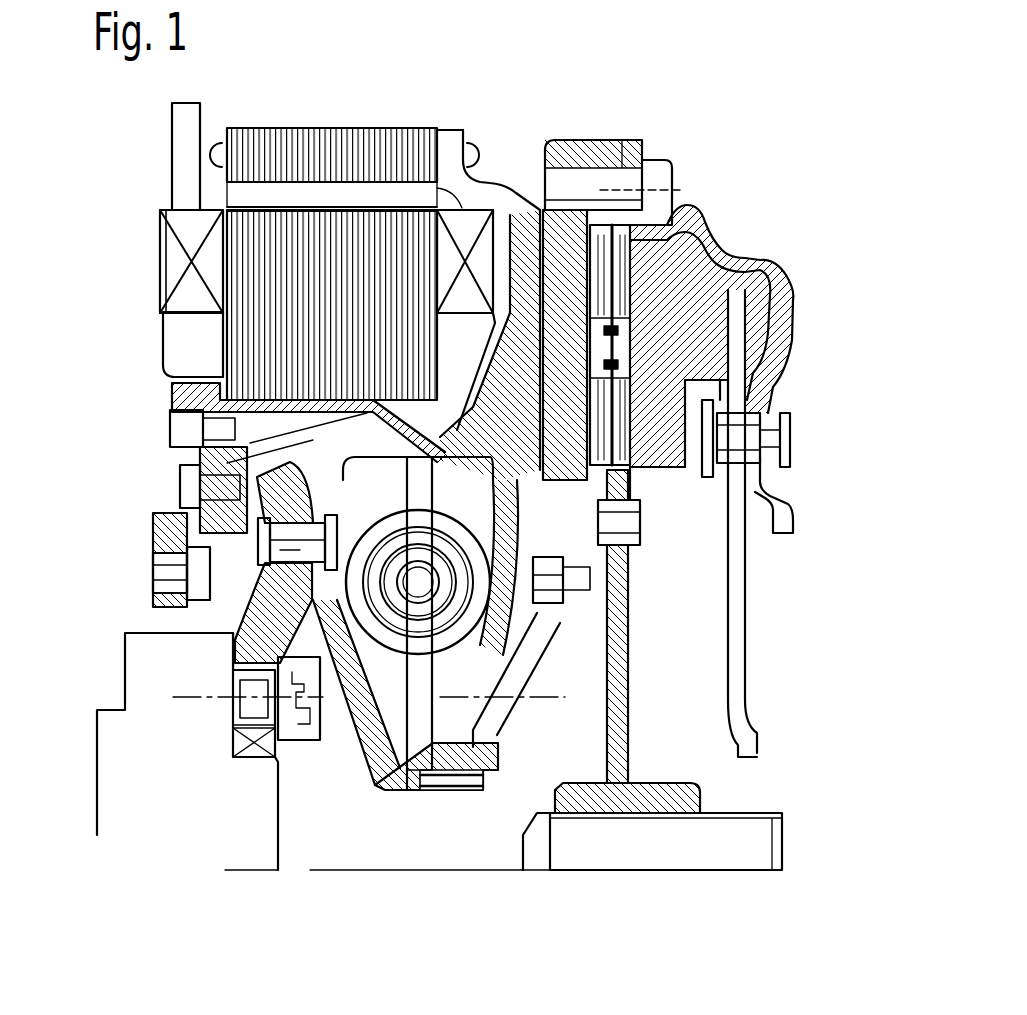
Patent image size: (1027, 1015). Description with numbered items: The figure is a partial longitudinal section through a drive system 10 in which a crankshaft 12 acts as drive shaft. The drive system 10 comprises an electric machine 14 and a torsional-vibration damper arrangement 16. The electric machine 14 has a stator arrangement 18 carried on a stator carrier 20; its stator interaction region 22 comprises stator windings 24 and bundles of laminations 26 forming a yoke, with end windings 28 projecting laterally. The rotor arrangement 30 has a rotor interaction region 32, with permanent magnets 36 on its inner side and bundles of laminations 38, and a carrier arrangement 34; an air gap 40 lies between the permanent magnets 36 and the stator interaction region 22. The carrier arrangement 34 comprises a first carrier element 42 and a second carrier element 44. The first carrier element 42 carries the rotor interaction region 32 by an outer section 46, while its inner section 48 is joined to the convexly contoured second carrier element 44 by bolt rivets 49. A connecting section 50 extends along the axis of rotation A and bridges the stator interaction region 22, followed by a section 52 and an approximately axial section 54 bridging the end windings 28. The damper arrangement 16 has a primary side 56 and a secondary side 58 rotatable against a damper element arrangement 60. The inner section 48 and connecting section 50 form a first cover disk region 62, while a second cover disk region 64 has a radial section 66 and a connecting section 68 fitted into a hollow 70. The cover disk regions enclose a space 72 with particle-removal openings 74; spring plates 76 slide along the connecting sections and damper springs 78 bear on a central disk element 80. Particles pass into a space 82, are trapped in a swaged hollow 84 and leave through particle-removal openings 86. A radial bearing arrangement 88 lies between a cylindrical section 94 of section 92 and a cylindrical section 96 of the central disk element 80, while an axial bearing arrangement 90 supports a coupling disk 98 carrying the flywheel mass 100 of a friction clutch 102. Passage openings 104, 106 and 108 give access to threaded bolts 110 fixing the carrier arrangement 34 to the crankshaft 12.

The drive system 10 is at (546, 103).
The crankshaft 12 is at (240, 870).
The electric machine 14 is at (266, 88).
The torsional-vibration damper arrangement 16 is at (580, 790).
The stator arrangement 18 is at (150, 300).
The stator carrier 20 is at (180, 458).
The stator interaction region 22 is at (235, 318).
The stator windings 24 is at (197, 217).
The bundles of laminations 26 is at (160, 258).
The end windings 28 is at (470, 200).
The rotor arrangement 30 is at (408, 103).
The rotor interaction region 32 is at (303, 120).
The carrier arrangement 34 is at (640, 395).
The permanent magnets 36 is at (220, 147).
The bundles of laminations 38 is at (370, 128).
The air gap 40 is at (240, 203).
The first carrier element 42 is at (675, 225).
The second carrier element 44 is at (243, 527).
The outer section 46 is at (452, 140).
The inner section 48 is at (237, 600).
The bolt rivets 49 is at (155, 570).
The connecting section 50 is at (175, 427).
The section 52 is at (758, 270).
The section 54 is at (505, 190).
The primary side 56 is at (353, 767).
The secondary side 58 is at (548, 690).
The damper element arrangement 60 is at (466, 655).
The first cover disk region 62 is at (190, 585).
The second cover disk region 64 is at (640, 522).
The section 66 is at (640, 543).
The connecting section 68 is at (718, 430).
The hollow 70 is at (700, 382).
The space 72 is at (765, 487).
The particle-removal openings 74 is at (208, 338).
The spring plates 76 is at (153, 515).
The damper springs 78 is at (237, 663).
The central disk element 80 is at (755, 732).
The space 82 is at (625, 310).
The swaged hollow 84 is at (640, 172).
The particle-removal openings 86 is at (598, 222).
The radial bearing arrangement 88 is at (548, 825).
The bearing arrangement 90 is at (792, 440).
The section 92 is at (380, 778).
The cylindrical section 94 is at (492, 784).
The cylindrical section 96 is at (525, 778).
The coupling disk 98 is at (700, 612).
The flywheel mass 100 is at (683, 202).
The friction clutch 102 is at (745, 231).
The passage opening 104 is at (360, 717).
The passage opening 106 is at (400, 782).
The passage opening 108 is at (633, 740).
The threaded bolts 110 is at (240, 723).
The axis of rotation A is at (452, 878).